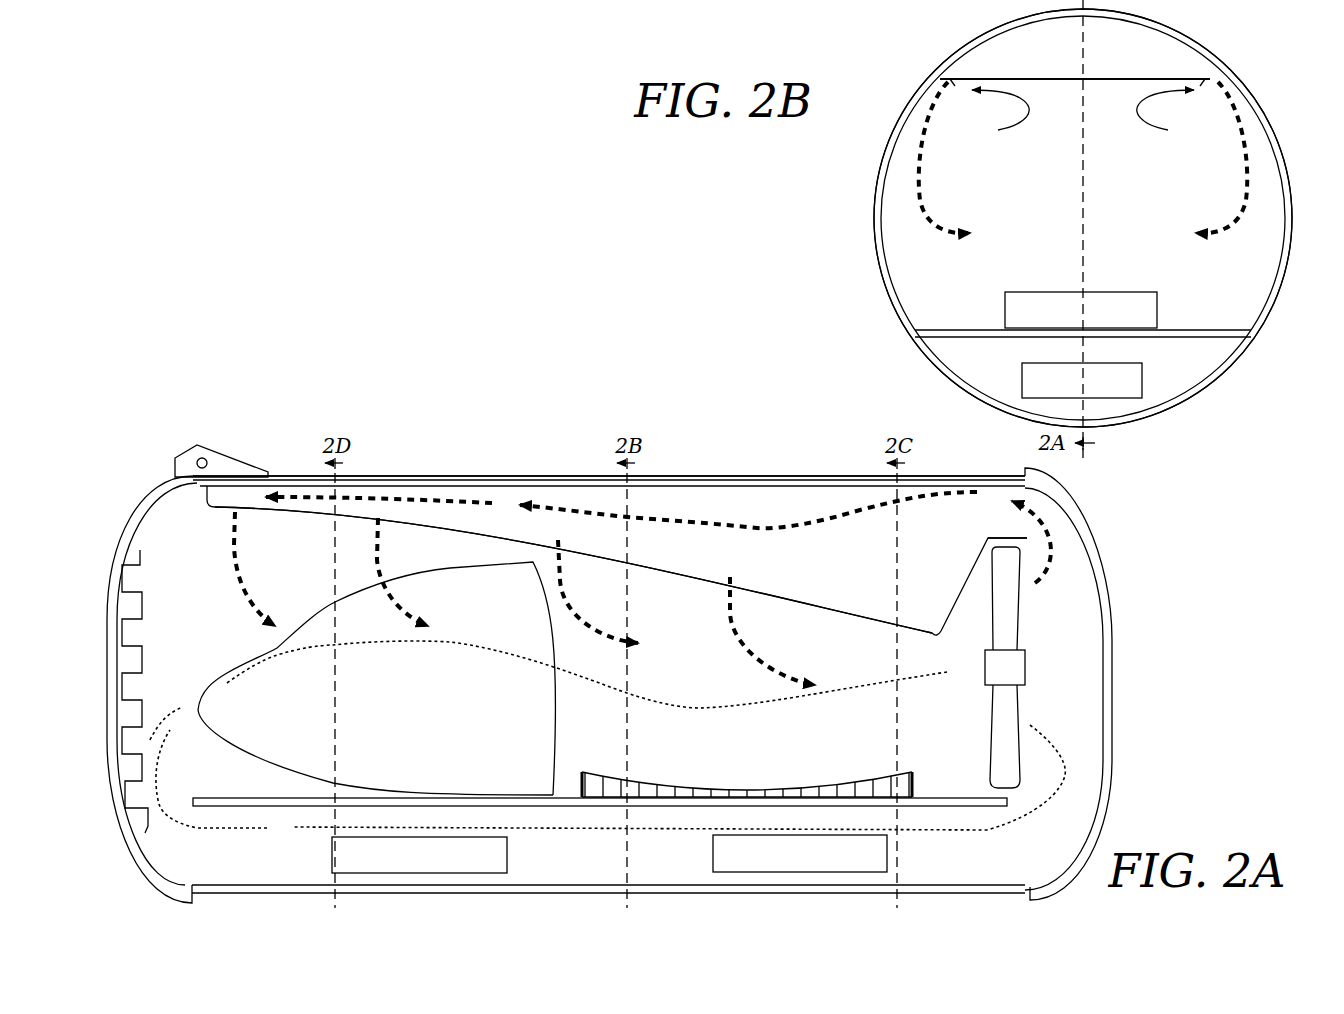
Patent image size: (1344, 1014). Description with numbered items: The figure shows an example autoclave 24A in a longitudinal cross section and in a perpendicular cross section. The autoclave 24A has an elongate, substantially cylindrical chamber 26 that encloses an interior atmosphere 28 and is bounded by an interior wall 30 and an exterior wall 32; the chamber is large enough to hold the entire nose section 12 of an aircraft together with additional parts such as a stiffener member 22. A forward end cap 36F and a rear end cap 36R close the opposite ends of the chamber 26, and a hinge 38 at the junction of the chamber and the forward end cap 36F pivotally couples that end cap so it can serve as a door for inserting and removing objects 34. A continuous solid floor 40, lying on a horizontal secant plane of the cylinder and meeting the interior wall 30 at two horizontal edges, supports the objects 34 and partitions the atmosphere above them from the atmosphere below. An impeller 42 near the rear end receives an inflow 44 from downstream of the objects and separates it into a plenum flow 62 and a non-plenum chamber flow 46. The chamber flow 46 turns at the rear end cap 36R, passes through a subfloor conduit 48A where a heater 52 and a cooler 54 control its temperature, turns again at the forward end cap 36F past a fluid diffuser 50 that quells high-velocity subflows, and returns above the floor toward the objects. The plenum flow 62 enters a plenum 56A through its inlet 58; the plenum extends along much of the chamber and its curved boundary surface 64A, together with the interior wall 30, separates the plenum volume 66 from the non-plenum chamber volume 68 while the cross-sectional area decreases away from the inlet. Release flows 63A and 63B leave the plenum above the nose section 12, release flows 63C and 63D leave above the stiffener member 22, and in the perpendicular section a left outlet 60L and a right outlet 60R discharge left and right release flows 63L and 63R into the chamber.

In FIG. 2A, the nose section 12 is at (369, 686).
In FIG. 2A, the stiffener member 22 is at (822, 787).
In FIG. 2B, the stiffener member 22 is at (1069, 319).
In FIG. 2A, the autoclave 24A is at (407, 400).
In FIG. 2B, the autoclave 24A is at (1265, 380).
In FIG. 2A, the elongate chamber 26 is at (728, 470).
In FIG. 2B, the elongate chamber 26 is at (1270, 99).
In FIG. 2A, the interior atmosphere 28 is at (205, 622).
In FIG. 2A, the interior wall 30 is at (990, 883).
In FIG. 2B, the interior wall 30 is at (1268, 297).
In FIG. 2A, the exterior wall 32 is at (748, 476).
In FIG. 2A, the objects 34 is at (685, 682).
In FIG. 2A, the forward end cap 36F is at (107, 684).
In FIG. 2A, the rear end cap 36R is at (1113, 683).
In FIG. 2A, the hinge 38 is at (245, 457).
In FIG. 2A, the floor 40 is at (283, 798).
In FIG. 2B, the floor 40 is at (975, 328).
In FIG. 2A, the impeller 42 is at (994, 677).
In FIG. 2A, the inflow 44 is at (929, 707).
In FIG. 2A, the chamber flow 46 is at (1067, 751).
In FIG. 2A, the subfloor conduit 48A is at (561, 856).
In FIG. 2A, the fluid diffuser 50 is at (143, 833).
In FIG. 2A, the heater 52 is at (407, 866).
In FIG. 2B, the heater 52 is at (1071, 389).
In FIG. 2A, the cooler 54 is at (789, 864).
In FIG. 2A, the plenum 56A is at (853, 577).
In FIG. 2B, the plenum 56A is at (1010, 62).
In FIG. 2A, the inlet 58 is at (991, 488).
In FIG. 2B, the left outlet 60L is at (998, 116).
In FIG. 2B, the right outlet 60R is at (1170, 116).
In FIG. 2A, the plenum flow 62 is at (747, 522).
In FIG. 2A, the release flow 63A is at (240, 536).
In FIG. 2A, the release flow 63B is at (385, 544).
In FIG. 2A, the release flow 63C is at (568, 571).
In FIG. 2A, the release flow 63D is at (736, 607).
In FIG. 2B, the left release flow 63L is at (938, 227).
In FIG. 2B, the right release flow 63R is at (1191, 227).
In FIG. 2A, the boundary surface 64A is at (888, 622).
In FIG. 2B, the boundary surface 64A is at (1172, 79).
In FIG. 2B, the plenum volume 66 is at (924, 22).
In FIG. 2B, the non-plenum chamber volume 68 is at (858, 55).